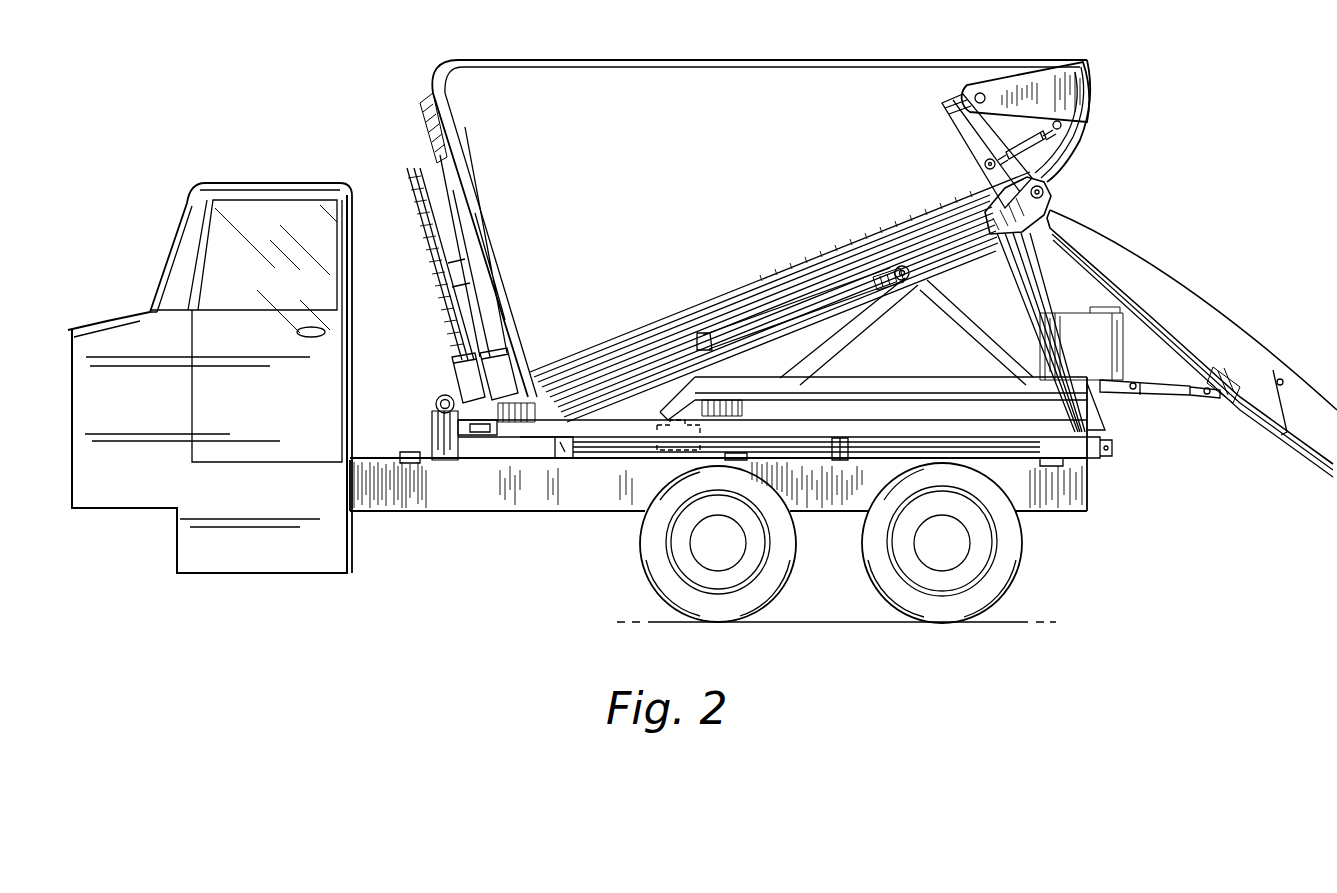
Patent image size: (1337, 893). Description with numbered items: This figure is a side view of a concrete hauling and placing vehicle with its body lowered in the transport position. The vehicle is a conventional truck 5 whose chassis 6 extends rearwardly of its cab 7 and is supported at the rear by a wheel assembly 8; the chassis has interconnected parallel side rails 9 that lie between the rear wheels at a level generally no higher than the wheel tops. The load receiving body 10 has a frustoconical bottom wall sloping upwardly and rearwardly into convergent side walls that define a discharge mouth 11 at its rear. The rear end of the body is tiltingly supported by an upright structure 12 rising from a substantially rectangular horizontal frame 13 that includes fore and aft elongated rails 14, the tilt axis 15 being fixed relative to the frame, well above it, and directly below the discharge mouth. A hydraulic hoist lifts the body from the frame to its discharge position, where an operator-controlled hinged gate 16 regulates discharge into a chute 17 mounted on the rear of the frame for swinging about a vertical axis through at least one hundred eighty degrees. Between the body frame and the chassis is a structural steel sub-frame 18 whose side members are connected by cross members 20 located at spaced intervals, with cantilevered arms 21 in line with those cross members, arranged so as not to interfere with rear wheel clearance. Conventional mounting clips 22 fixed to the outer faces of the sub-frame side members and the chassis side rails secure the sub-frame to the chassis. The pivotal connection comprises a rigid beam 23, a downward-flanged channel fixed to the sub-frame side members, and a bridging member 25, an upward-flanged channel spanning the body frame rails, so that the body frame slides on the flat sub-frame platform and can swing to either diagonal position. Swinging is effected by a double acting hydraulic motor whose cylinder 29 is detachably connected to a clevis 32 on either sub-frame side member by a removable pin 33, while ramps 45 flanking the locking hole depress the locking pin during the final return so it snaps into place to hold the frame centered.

The truck 5 is at (325, 657).
The chassis 6 is at (537, 484).
The cab 7 is at (262, 184).
The wheel assembly 8 is at (872, 634).
The side rails 9 is at (641, 504).
The load receiving body 10 is at (872, 60).
The discharge mouth 11 is at (1088, 150).
The upright structure 12 is at (1040, 275).
The horizontal frame 13 is at (915, 412).
The rails 14 is at (558, 420).
The axis 15 is at (1052, 195).
The hinged gate 16 is at (1090, 95).
The chute 17 is at (1195, 290).
The sub-frame 18 is at (877, 451).
The cross members 20 is at (1100, 447).
The cantilevered arms 21 is at (565, 446).
The mounting clips 22 is at (412, 466).
The rigid beam 23 is at (668, 449).
The bridging member 25 is at (710, 407).
The cylinder 29 is at (440, 432).
The clevis 32 is at (447, 452).
The removable pin 33 is at (438, 398).
The ramps 45 is at (1110, 450).